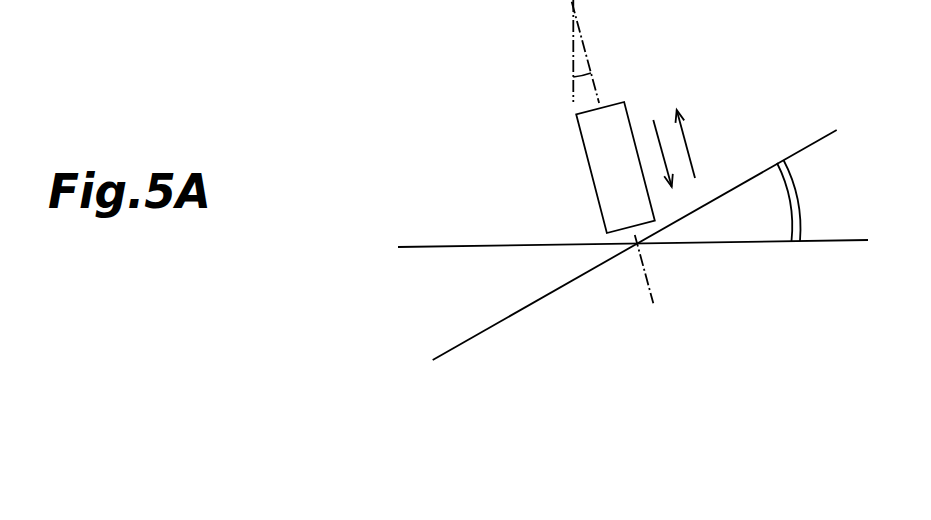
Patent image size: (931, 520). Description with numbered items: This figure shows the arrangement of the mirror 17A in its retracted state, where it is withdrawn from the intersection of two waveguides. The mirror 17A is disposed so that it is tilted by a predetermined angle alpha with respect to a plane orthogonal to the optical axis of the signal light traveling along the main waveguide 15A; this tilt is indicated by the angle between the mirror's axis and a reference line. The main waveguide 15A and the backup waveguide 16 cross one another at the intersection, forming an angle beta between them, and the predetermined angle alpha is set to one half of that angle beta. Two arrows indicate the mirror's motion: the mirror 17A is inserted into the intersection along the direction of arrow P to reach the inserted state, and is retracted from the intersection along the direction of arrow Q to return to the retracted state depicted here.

The mirror 17A is at (607, 101).
The main waveguide 15A is at (462, 245).
The backup waveguide 16 is at (492, 330).
The direction of arrow P is at (654, 120).
The direction of arrow Q is at (687, 148).